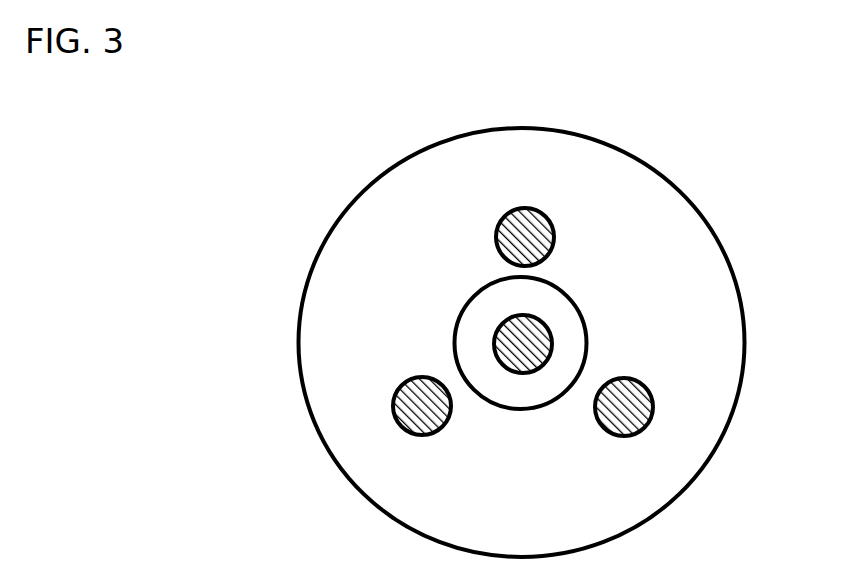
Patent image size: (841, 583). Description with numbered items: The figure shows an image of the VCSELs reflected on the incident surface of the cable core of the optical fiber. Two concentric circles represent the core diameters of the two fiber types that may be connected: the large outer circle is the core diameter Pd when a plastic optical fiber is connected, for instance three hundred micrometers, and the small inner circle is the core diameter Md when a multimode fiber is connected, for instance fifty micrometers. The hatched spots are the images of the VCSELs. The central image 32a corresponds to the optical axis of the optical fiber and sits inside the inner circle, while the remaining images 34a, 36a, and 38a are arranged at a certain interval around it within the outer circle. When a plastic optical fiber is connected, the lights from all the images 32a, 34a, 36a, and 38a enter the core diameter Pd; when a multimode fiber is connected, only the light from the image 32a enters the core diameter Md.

The core diameter when POF is connected Pd is at (694, 209).
The core diameter when MMF is connected Md is at (583, 320).
The image of the VCSEL 32 32a is at (551, 339).
The image of the VCSEL 34 34a is at (527, 207).
The image of the VCSEL 36 36a is at (404, 430).
The image of the VCSEL 38 38a is at (652, 410).